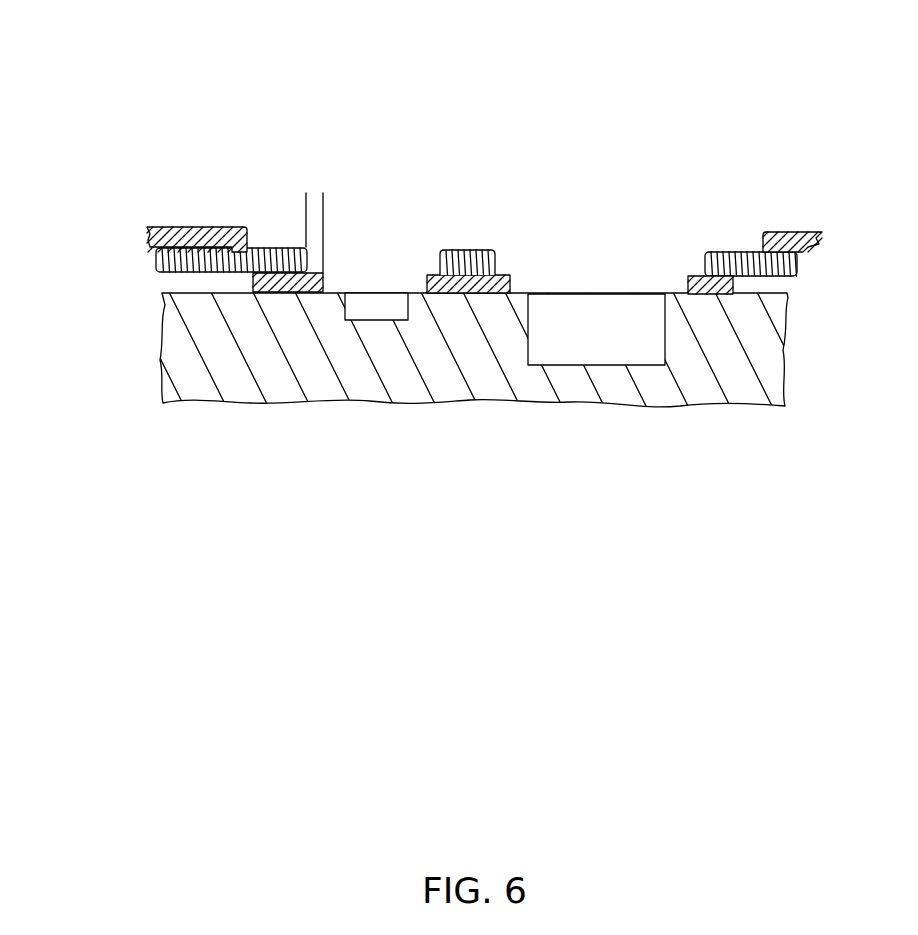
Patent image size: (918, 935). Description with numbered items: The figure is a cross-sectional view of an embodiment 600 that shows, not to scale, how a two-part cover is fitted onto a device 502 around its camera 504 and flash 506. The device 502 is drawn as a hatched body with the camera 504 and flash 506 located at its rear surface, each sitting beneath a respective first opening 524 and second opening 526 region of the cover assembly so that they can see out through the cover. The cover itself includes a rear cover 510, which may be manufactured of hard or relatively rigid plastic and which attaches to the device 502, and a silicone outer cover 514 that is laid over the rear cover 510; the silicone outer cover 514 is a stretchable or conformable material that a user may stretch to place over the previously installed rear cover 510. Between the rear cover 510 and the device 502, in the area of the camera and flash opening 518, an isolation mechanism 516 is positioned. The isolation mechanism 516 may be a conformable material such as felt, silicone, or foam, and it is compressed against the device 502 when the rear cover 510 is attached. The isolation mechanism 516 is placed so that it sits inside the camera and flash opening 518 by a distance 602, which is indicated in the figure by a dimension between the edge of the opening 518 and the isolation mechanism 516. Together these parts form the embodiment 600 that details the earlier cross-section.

The device 502 is at (327, 365).
The camera 504 is at (577, 337).
The flash 506 is at (360, 308).
The rear cover 510 is at (241, 227).
The silicone outer cover 514 is at (198, 227).
The isolation mechanism 516 is at (687, 284).
The camera and flash opening 518 is at (737, 252).
The first opening 524 is at (533, 262).
The second opening 526 is at (403, 258).
The embodiment 600 is at (368, 570).
The distance 602 is at (280, 207).